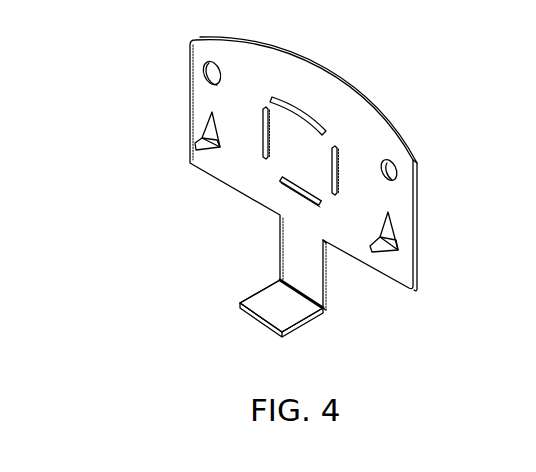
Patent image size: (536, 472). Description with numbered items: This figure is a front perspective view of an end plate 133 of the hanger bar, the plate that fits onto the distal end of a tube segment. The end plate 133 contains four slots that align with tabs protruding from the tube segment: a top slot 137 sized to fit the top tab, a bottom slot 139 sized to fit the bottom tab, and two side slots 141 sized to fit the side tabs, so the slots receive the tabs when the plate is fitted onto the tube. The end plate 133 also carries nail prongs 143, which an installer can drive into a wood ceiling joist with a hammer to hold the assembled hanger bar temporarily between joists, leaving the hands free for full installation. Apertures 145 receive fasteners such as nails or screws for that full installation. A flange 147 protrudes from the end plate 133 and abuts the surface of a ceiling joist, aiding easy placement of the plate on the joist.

The end plate 133 is at (208, 224).
The top slot 137 is at (325, 135).
The bottom slot 139 is at (322, 204).
The side slots 141 is at (270, 153).
The nail prongs 143 is at (192, 147).
The apertures 145 is at (200, 73).
The flange 147 is at (292, 303).